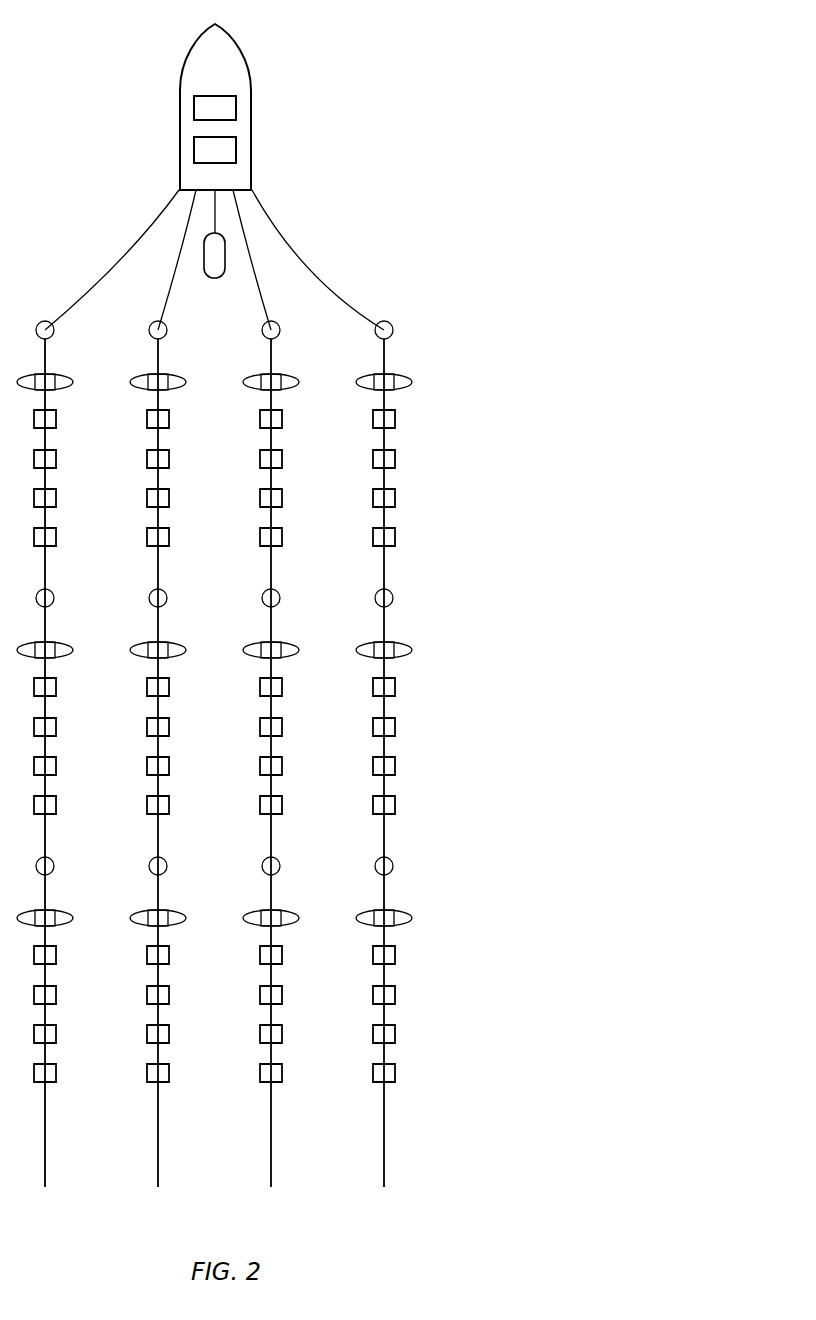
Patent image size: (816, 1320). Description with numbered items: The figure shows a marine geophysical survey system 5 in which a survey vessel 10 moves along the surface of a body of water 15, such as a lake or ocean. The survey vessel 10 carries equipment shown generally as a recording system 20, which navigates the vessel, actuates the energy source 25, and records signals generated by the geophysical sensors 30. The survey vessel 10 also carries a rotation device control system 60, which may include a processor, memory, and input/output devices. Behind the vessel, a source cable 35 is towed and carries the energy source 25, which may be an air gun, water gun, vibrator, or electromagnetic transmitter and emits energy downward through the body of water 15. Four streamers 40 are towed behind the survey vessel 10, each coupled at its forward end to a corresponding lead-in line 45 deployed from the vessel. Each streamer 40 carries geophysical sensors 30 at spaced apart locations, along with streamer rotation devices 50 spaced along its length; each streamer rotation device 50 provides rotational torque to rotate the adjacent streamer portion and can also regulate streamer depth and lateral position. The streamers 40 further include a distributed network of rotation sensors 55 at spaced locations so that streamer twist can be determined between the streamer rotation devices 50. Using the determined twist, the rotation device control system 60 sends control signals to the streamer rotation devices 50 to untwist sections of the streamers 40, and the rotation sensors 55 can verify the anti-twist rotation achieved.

The marine geophysical survey system 5 is at (448, 66).
The survey vessel 10 is at (185, 57).
The body of water 15 is at (568, 235).
The recording system 20 is at (194, 146).
The energy source 25 is at (226, 241).
The geophysical sensors 30 is at (56, 422).
The source cable 35 is at (214, 203).
The streamers 40 is at (45, 1114).
The lead-in lines 45 is at (183, 250).
The streamer rotation devices 50 is at (55, 374).
The rotation sensors 55 is at (54, 334).
The rotation device control system 60 is at (194, 98).